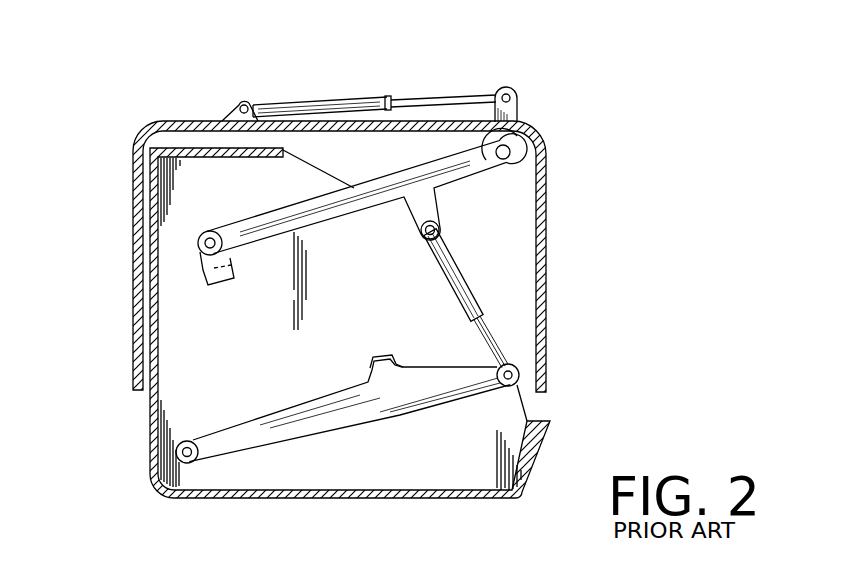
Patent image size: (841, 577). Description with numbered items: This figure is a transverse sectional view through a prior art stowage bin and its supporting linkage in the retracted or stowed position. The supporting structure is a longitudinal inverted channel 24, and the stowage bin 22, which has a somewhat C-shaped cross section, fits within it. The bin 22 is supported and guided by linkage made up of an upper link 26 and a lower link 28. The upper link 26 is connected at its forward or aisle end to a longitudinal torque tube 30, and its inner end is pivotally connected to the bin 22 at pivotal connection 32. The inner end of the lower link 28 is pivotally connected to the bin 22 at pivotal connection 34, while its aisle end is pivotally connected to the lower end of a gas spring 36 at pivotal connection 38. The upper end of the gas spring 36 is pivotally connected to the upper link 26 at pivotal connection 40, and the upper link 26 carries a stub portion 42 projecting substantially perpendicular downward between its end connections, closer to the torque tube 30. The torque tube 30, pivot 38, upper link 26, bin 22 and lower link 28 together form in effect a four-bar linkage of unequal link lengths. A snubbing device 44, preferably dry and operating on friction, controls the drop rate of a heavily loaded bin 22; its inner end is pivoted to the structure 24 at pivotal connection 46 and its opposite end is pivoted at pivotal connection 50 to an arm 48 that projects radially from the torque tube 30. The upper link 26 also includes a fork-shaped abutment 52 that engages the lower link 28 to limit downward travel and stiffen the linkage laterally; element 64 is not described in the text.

The stowage bin 22 is at (216, 499).
The longitudinal inverted channel 24 is at (548, 210).
The upper link 26 is at (277, 212).
The lower link 28 is at (233, 432).
The torque tube 30 is at (518, 150).
The pivotal connection 32 is at (198, 243).
The pivotal connection 34 is at (177, 450).
The gas spring 36 is at (460, 296).
The pivotal connection 38 is at (520, 383).
The pivotal connection 40 is at (414, 233).
The stub portion 42 is at (436, 208).
The snubbing device 44 is at (338, 98).
The pivotal connection 46 is at (242, 104).
The arm 48 is at (516, 108).
The pivotal connection 50 is at (507, 93).
The fork-shaped abutment 52 is at (207, 279).
The bracket 64 is at (372, 358).